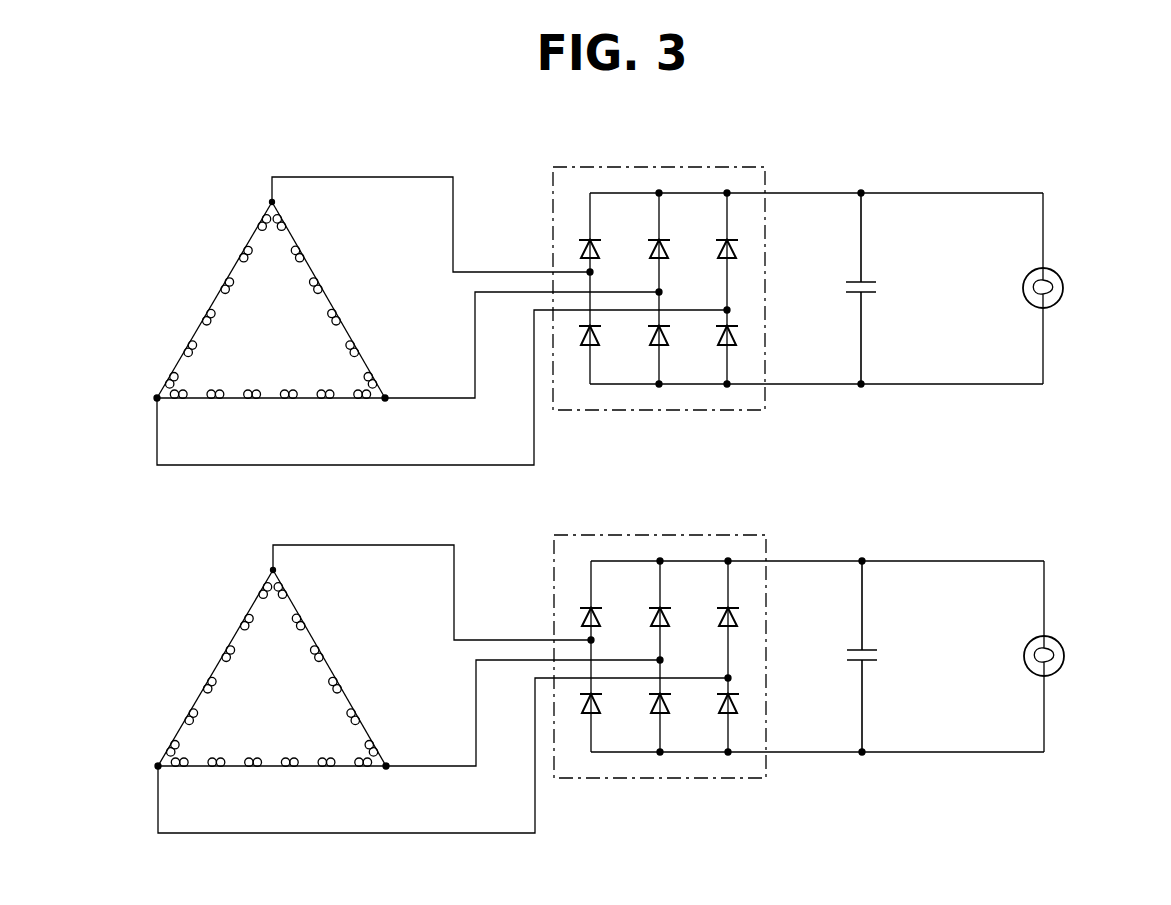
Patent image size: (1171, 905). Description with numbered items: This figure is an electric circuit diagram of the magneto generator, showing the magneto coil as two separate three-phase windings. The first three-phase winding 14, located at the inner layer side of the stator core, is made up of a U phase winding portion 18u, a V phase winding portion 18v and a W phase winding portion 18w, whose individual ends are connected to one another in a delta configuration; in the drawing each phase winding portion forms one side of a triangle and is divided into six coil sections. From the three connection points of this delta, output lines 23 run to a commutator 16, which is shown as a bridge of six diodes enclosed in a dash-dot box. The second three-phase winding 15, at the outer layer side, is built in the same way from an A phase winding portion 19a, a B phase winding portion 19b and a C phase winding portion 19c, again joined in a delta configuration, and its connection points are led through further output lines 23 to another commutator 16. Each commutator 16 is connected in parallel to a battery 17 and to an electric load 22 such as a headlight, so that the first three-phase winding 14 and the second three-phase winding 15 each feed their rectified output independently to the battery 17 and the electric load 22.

The first three-phase winding 14 is at (202, 257).
The second three-phase winding 15 is at (203, 618).
The commutator 16 is at (748, 165).
The battery 17 is at (866, 280).
The U phase winding portion 18u is at (182, 283).
The V phase winding portion 18v is at (273, 412).
The W phase winding portion 18w is at (323, 258).
The A phase winding portion 19a is at (158, 666).
The B phase winding portion 19b is at (272, 822).
The C phase winding portion 19c is at (360, 666).
The electric load 22 is at (1057, 273).
The output lines 23 is at (418, 177).